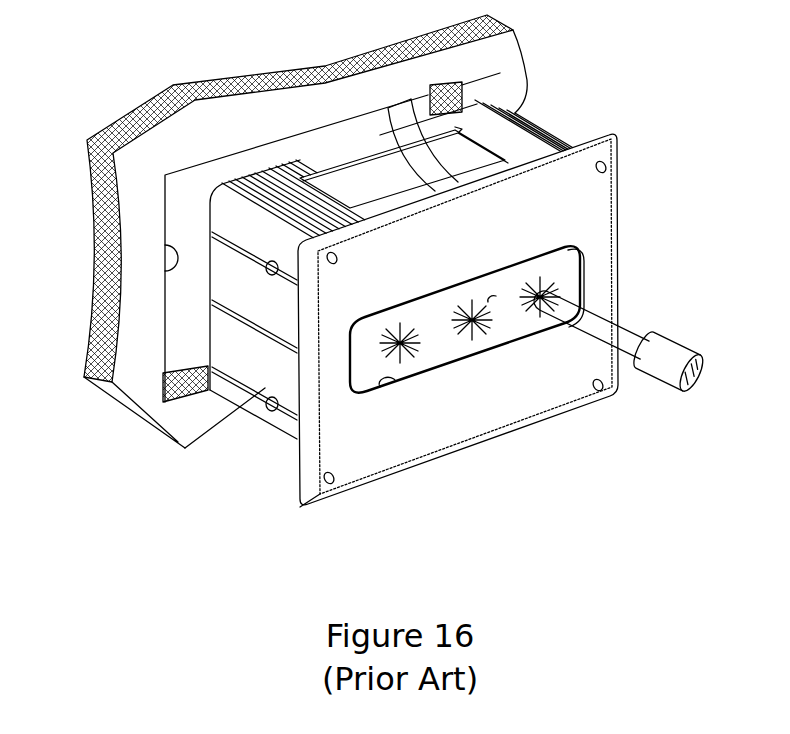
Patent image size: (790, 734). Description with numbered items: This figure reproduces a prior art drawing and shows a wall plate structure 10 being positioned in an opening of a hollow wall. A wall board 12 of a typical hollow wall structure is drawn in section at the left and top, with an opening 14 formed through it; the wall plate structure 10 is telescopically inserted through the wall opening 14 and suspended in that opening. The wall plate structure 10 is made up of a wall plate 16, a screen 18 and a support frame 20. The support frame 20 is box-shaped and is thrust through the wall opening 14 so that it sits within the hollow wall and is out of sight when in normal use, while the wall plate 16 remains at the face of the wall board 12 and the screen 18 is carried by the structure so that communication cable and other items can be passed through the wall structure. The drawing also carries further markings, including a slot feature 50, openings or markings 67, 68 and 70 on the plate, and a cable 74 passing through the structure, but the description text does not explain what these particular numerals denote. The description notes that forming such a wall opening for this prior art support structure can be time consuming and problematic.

The wall plate structure 10 is at (451, 279).
The wall board 12 is at (163, 152).
The opening 14 is at (163, 242).
The wall plate 16 is at (602, 210).
The screen 18 is at (432, 355).
The support frame 20 is at (259, 423).
The slot recess 50 is at (394, 390).
The cable opening 67 is at (489, 302).
The cable entry 68 is at (397, 333).
The cable entry openings 70 is at (470, 312).
The cable 74 is at (405, 125).